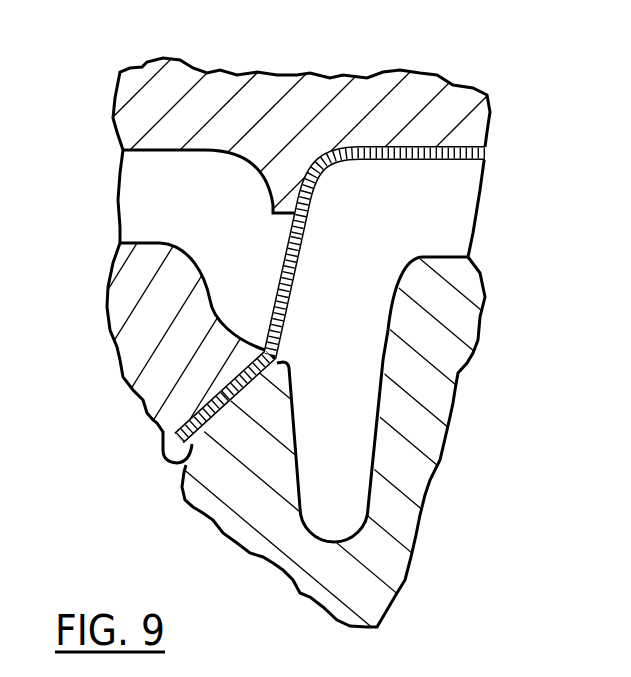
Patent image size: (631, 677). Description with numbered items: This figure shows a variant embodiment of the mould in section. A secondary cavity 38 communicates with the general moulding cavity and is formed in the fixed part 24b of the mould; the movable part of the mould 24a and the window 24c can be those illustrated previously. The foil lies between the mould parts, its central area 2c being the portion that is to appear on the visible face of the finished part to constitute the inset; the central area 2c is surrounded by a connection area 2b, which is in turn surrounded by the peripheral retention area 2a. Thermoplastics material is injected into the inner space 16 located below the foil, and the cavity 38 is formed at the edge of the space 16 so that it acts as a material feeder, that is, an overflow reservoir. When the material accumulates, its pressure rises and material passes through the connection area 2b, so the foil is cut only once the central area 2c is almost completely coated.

The movable part of the mould 24a is at (407, 112).
The fixed part of the mould 24b is at (425, 402).
The window 24c is at (160, 353).
The peripheral retention area 2a is at (176, 467).
The connection area 2b is at (292, 283).
The central area 2c is at (486, 151).
The inner space 16 is at (435, 197).
The secondary cavity 38 is at (337, 493).